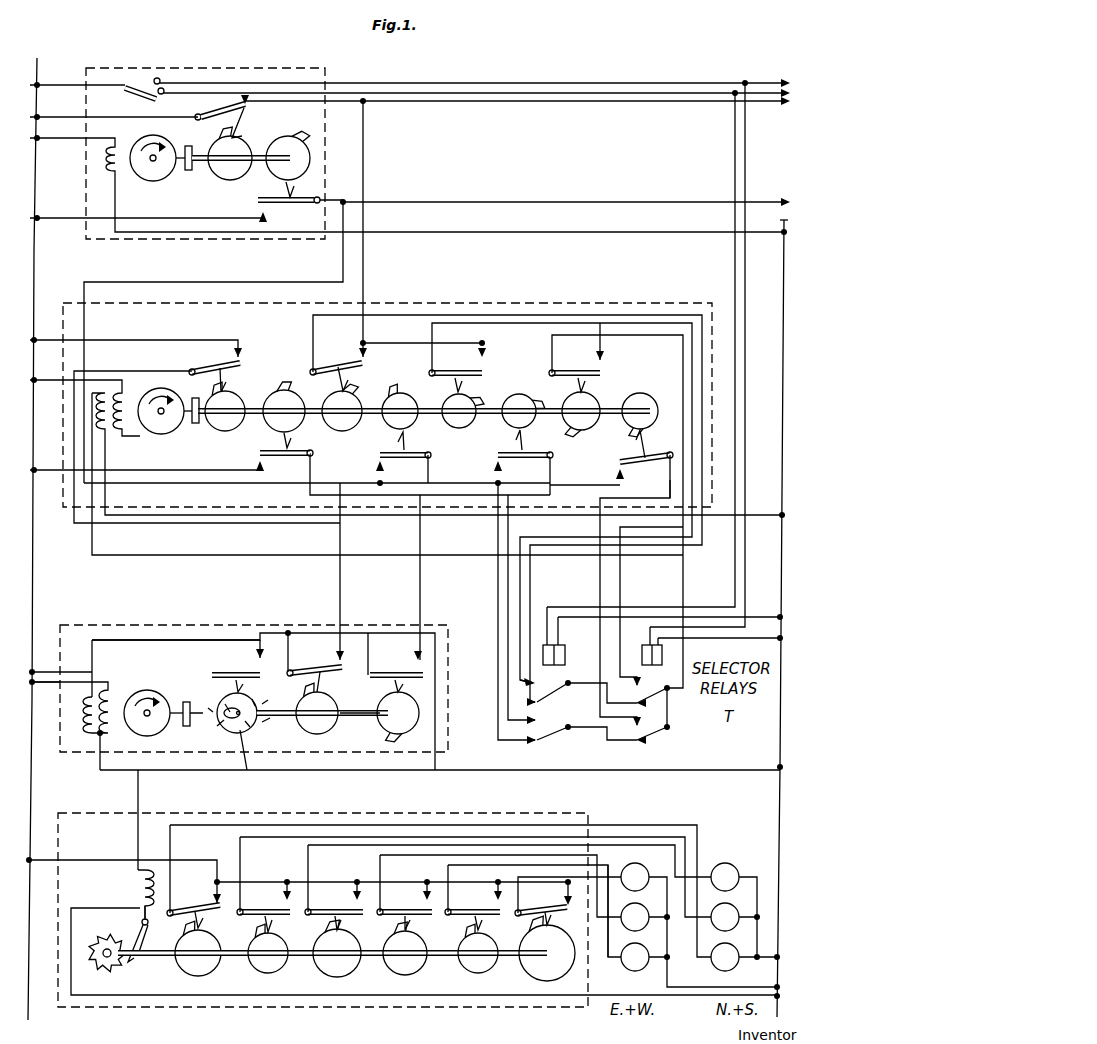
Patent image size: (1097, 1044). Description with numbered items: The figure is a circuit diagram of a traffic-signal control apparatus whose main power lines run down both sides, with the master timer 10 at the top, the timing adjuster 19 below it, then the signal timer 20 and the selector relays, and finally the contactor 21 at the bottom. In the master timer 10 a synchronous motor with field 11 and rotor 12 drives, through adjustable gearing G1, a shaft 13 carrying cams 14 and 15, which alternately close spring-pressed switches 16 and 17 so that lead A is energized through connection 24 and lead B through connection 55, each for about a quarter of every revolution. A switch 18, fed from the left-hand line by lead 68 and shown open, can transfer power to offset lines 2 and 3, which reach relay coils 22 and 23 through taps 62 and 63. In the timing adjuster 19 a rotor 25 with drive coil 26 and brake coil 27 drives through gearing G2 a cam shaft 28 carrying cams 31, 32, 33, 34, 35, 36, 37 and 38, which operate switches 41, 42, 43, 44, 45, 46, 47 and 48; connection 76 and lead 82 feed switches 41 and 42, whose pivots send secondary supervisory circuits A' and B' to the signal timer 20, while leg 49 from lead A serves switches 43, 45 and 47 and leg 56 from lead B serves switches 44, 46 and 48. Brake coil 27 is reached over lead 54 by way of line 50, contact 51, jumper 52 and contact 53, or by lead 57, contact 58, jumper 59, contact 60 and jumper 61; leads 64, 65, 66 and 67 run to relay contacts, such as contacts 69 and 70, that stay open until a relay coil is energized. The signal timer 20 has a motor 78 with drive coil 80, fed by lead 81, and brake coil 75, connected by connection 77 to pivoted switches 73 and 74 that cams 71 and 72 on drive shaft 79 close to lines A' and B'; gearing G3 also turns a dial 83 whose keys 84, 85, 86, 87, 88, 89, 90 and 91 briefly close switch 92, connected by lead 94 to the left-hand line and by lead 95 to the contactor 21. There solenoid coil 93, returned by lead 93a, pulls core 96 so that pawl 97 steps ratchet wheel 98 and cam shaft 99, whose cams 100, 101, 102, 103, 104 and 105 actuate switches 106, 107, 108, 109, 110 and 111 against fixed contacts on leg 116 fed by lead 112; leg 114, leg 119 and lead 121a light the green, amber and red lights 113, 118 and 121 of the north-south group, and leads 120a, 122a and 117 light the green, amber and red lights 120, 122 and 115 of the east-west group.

The master timer 10 is at (268, 66).
The lead 68 is at (78, 87).
The switch 18 is at (136, 99).
The offset circuit line 2 is at (356, 89).
The offset circuit line 3 is at (437, 90).
The connection 24 is at (78, 113).
The switch 16 is at (219, 110).
The circuit lead A is at (517, 108).
The leg 49 is at (366, 168).
The field 11 is at (110, 160).
The rotor 12 is at (168, 146).
The gearing G1 is at (183, 169).
The shaft 13 is at (262, 166).
The cam 14 is at (241, 142).
The cam 15 is at (292, 140).
The switch 17 is at (285, 201).
The circuit lead B is at (565, 192).
The connection 55 is at (138, 221).
The connecting leg 56 is at (178, 283).
The timing adjuster 19 is at (466, 300).
The connection 76 is at (150, 344).
The secondary supervisory circuit A' is at (215, 502).
The switch 41 is at (216, 362).
The switch 43 is at (342, 362).
The line 50 is at (505, 314).
The switch 45 is at (458, 372).
The lead 64 is at (548, 323).
The switch 47 is at (578, 372).
The lead 66 is at (604, 335).
The lead 54 is at (460, 548).
The cam shaft 28 is at (213, 428).
The gearing G2 is at (195, 400).
The rotor 25 is at (165, 436).
The drive coil 26 is at (127, 432).
The brake coil 27 is at (104, 433).
The cam 31 is at (236, 395).
The cam 32 is at (288, 390).
The cam 33 is at (356, 402).
The cam 34 is at (410, 402).
The cam 35 is at (478, 401).
The cam 36 is at (525, 397).
The cam 37 is at (600, 403).
The cam 38 is at (648, 399).
The switch 42 is at (285, 457).
The lead 82 is at (175, 473).
The switch 44 is at (403, 460).
The switch 46 is at (522, 460).
The connection 65 is at (551, 467).
The switch 48 is at (642, 468).
The connection 67 is at (668, 490).
The lead 57 is at (498, 590).
The contact 70 is at (558, 718).
The contact 69 is at (539, 681).
The contact 51 is at (540, 702).
The contact 58 is at (540, 741).
The jumper 52 is at (571, 682).
The contact 53 is at (641, 703).
The jumper 59 is at (572, 726).
The contact 60 is at (641, 740).
The jumper 61 is at (669, 711).
The relay coil 22 is at (566, 651).
The relay coil 23 is at (664, 658).
The lead 62 is at (733, 175).
The lead 63 is at (746, 176).
The signal timer 20 is at (305, 628).
The lead 95 is at (368, 627).
The lead 81 is at (72, 672).
The brake coil 75 is at (88, 730).
The drive coil 80 is at (122, 700).
The connection 77 is at (198, 645).
The lead 94 is at (125, 674).
The motor 78 is at (165, 700).
The gearing G3 is at (180, 727).
The key 85 is at (208, 706).
The key 84 is at (226, 705).
The key 87 is at (238, 733).
The key 86 is at (219, 728).
The key 88 is at (252, 729).
The key 89 is at (270, 726).
The key 90 is at (270, 708).
The key 91 is at (255, 706).
The cam 71 is at (334, 728).
The cam 72 is at (392, 710).
The drive shaft 79 is at (365, 728).
The switch 92 is at (243, 672).
The switch 73 is at (318, 670).
The switch 74 is at (400, 672).
The secondary supervisory circuit B' is at (429, 577).
The dial 83 is at (247, 772).
The contactor 21 is at (270, 818).
The connecting lead 112 is at (66, 866).
The circuit leg 116 is at (320, 880).
The core 96 is at (142, 876).
The coil 93 is at (142, 897).
The pawl 97 is at (150, 932).
The ratchet wheel 98 is at (118, 968).
The cam shaft 99 is at (162, 960).
The cam 100 is at (203, 977).
The cam 101 is at (268, 974).
The cam 102 is at (350, 977).
The cam 103 is at (418, 975).
The cam 104 is at (486, 974).
The cam 105 is at (555, 975).
The lead 93a is at (290, 1003).
The switch 106 is at (195, 907).
The circuit leg 114 is at (448, 825).
The switch 107 is at (262, 908).
The leg 119 is at (488, 837).
The switch 108 is at (332, 908).
The lead 121a is at (545, 845).
The switch 109 is at (404, 908).
The lead 122a is at (596, 852).
The switch 110 is at (472, 908).
The lead 120a is at (620, 864).
The switch 111 is at (545, 905).
The lead 117 is at (613, 876).
The red light 115 is at (650, 870).
The amber light 122 is at (645, 926).
The green light 120 is at (632, 968).
The red light 121 is at (732, 868).
The amber light 118 is at (735, 907).
The green light 113 is at (736, 968).